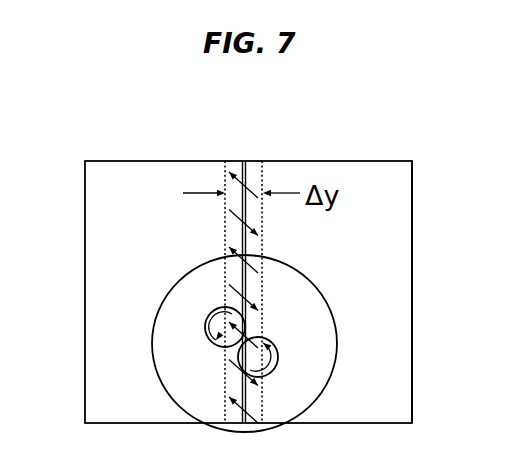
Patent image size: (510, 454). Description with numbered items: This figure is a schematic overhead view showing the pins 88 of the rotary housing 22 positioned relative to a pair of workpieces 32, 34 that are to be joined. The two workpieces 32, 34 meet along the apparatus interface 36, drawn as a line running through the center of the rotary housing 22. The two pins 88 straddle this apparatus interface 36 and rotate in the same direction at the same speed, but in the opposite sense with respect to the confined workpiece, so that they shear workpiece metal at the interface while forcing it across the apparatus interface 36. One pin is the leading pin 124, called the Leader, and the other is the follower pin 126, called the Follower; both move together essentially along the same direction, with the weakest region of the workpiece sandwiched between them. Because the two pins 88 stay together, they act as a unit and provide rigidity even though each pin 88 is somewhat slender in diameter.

The rotary housing 22 is at (150, 333).
The workpiece 32 is at (85, 231).
The workpiece 34 is at (412, 260).
The apparatus interface 36 is at (243, 161).
The pins 88 is at (207, 320).
The leading pin 124 is at (214, 339).
The follower pin 126 is at (274, 347).